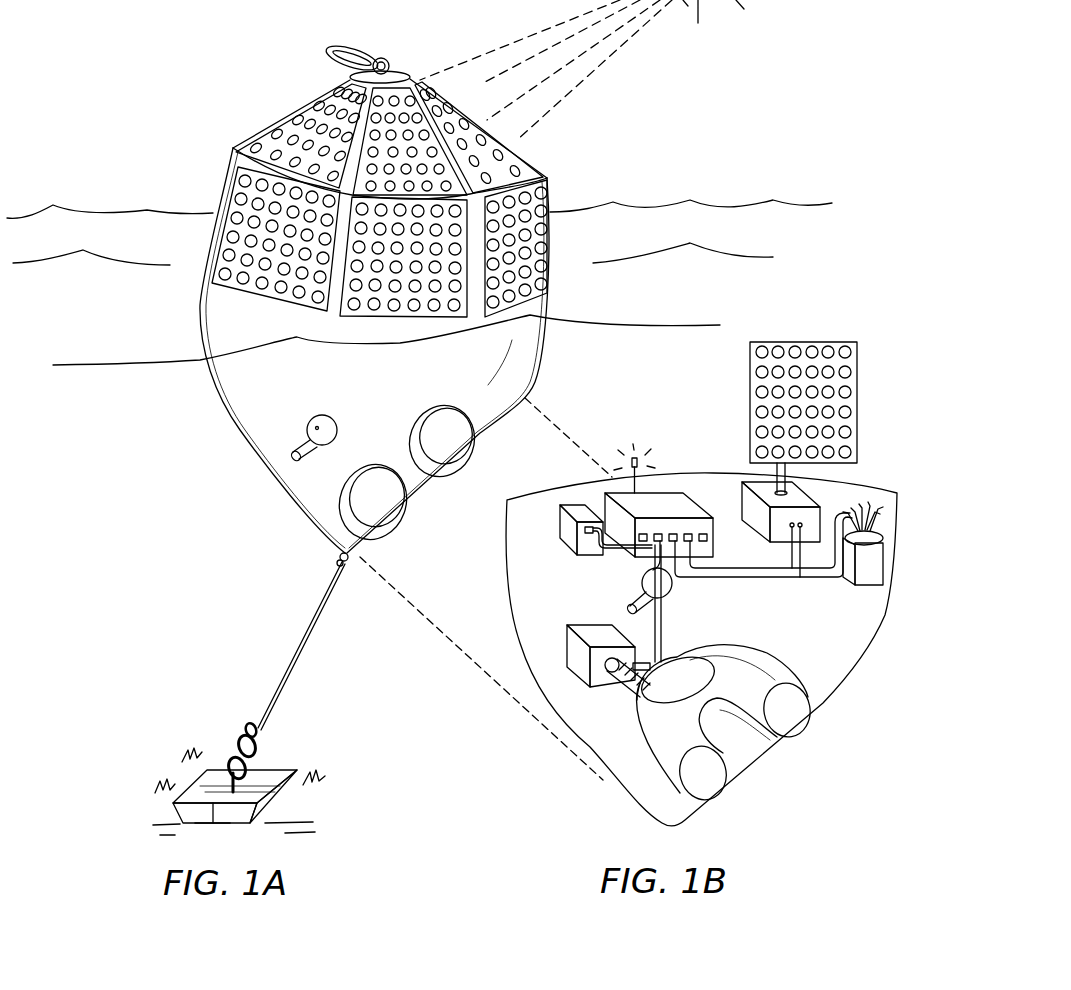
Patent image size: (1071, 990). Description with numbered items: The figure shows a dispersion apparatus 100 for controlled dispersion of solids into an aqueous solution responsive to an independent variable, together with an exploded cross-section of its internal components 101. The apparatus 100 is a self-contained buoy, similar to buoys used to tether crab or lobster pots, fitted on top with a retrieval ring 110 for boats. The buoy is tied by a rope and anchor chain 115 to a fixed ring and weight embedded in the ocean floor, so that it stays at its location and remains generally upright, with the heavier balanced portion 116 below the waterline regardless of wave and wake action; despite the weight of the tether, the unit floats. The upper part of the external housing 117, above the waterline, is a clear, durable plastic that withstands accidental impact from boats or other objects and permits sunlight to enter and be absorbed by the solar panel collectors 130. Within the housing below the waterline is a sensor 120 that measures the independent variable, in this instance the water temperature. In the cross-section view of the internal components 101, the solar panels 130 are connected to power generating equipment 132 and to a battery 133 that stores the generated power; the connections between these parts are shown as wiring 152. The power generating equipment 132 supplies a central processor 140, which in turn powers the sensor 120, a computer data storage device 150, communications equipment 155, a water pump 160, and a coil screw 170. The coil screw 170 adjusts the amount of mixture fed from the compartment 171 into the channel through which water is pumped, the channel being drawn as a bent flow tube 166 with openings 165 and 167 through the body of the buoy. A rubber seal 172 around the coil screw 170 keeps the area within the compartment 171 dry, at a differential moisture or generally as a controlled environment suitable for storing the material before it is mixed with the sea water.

In FIG. 1A, the dispersion apparatus 100 is at (270, 126).
In FIG. 1B, the internal components 101 is at (557, 487).
In FIG. 1A, the retrieval ring 110 is at (325, 53).
In FIG. 1A, the rope and anchor chain 115 is at (247, 725).
In FIG. 1A, the heavier balanced portion 116 is at (193, 308).
In FIG. 1A, the upper part of the external housing 117 is at (415, 72).
In FIG. 1A, the sensor 120 is at (293, 447).
In FIG. 1B, the sensor 120 is at (640, 587).
In FIG. 1B, the solar panel collectors 130 is at (812, 340).
In FIG. 1B, the power generating equipment 132 is at (743, 488).
In FIG. 1A, the battery 133 is at (578, 16).
In FIG. 1B, the battery 133 is at (883, 533).
In FIG. 1B, the central processor 140 is at (680, 500).
In FIG. 1B, the computer data storage device 150 is at (560, 527).
In FIG. 1B, the wiring 152 is at (823, 580).
In FIG. 1B, the communications equipment 155 is at (630, 457).
In FIG. 1B, the water pump 160 is at (667, 660).
In FIG. 1A, the flow opening 165 is at (447, 470).
In FIG. 1B, the flow opening 165 is at (810, 707).
In FIG. 1B, the flow tube 166 is at (753, 640).
In FIG. 1B, the outlet opening 167 is at (710, 783).
In FIG. 1B, the coil screw 170 is at (633, 700).
In FIG. 1B, the compartment 171 is at (587, 623).
In FIG. 1B, the rubber seal 172 is at (600, 678).